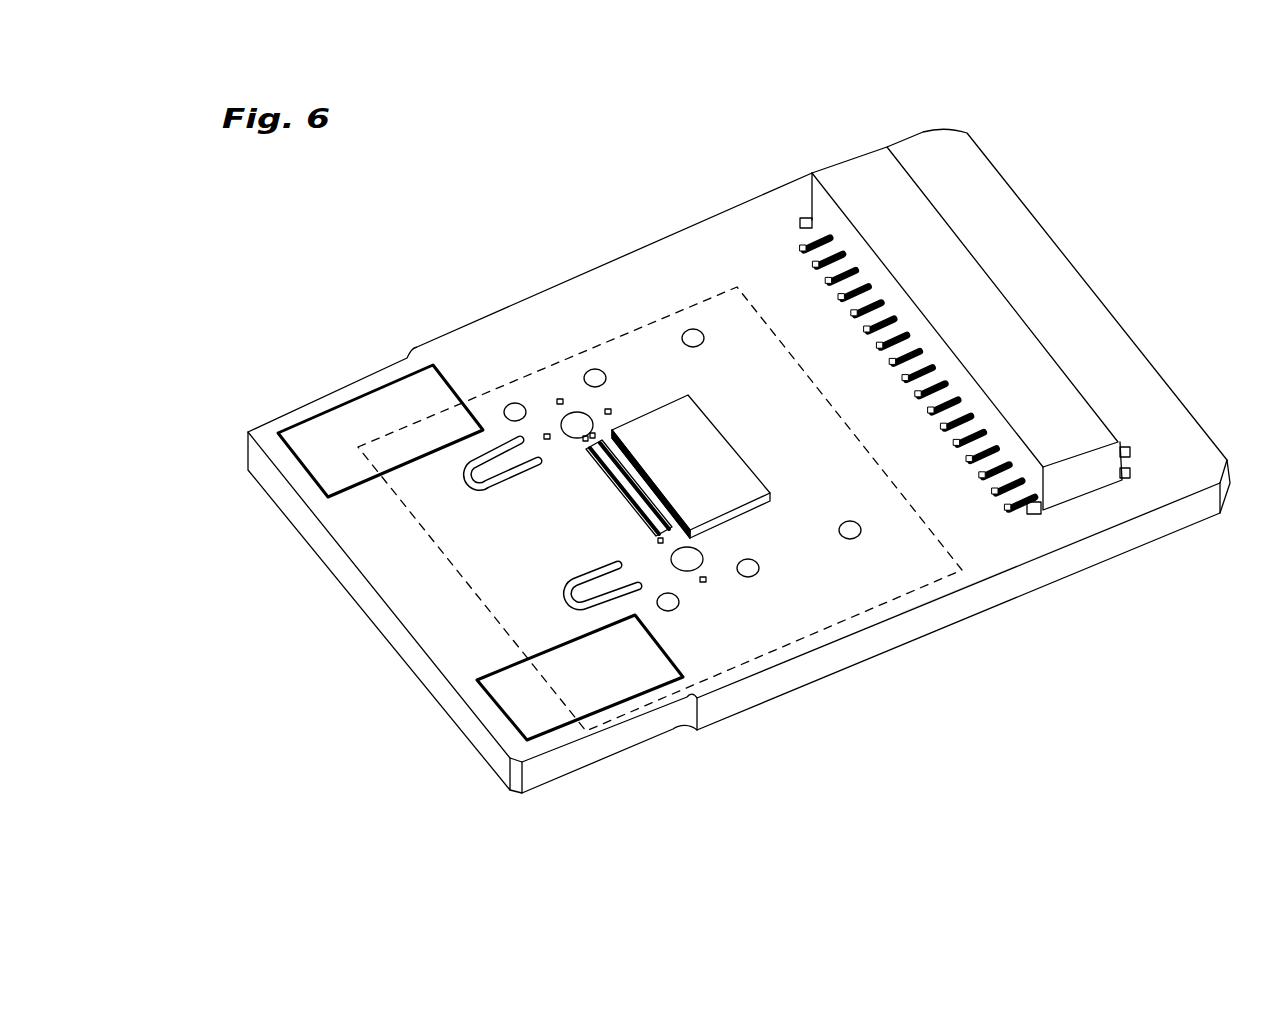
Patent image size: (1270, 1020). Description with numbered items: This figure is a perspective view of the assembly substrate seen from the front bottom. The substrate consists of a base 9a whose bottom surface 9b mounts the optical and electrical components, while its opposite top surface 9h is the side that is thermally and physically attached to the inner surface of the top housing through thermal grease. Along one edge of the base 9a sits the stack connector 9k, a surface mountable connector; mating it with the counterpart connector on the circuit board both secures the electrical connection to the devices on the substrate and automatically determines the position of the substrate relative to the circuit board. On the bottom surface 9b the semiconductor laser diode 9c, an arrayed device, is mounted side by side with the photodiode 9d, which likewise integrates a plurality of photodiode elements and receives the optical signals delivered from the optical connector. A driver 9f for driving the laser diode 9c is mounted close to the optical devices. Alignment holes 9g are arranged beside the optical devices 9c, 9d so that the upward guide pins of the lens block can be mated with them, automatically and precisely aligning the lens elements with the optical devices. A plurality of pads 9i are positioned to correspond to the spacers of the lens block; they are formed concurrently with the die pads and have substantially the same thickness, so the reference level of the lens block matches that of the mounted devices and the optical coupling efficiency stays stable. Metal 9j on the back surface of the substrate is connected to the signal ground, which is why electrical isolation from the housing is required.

The base 9a is at (490, 762).
The bottom surface 9b is at (1057, 282).
The semiconductor laser diode 9c is at (575, 488).
The photodiode 9d is at (620, 488).
The driver 9f is at (717, 440).
The alignment holes 9g is at (565, 413).
The top surface 9h is at (1067, 562).
The pads 9i is at (690, 330).
The metal 9j is at (962, 570).
The stack connector 9k is at (858, 163).